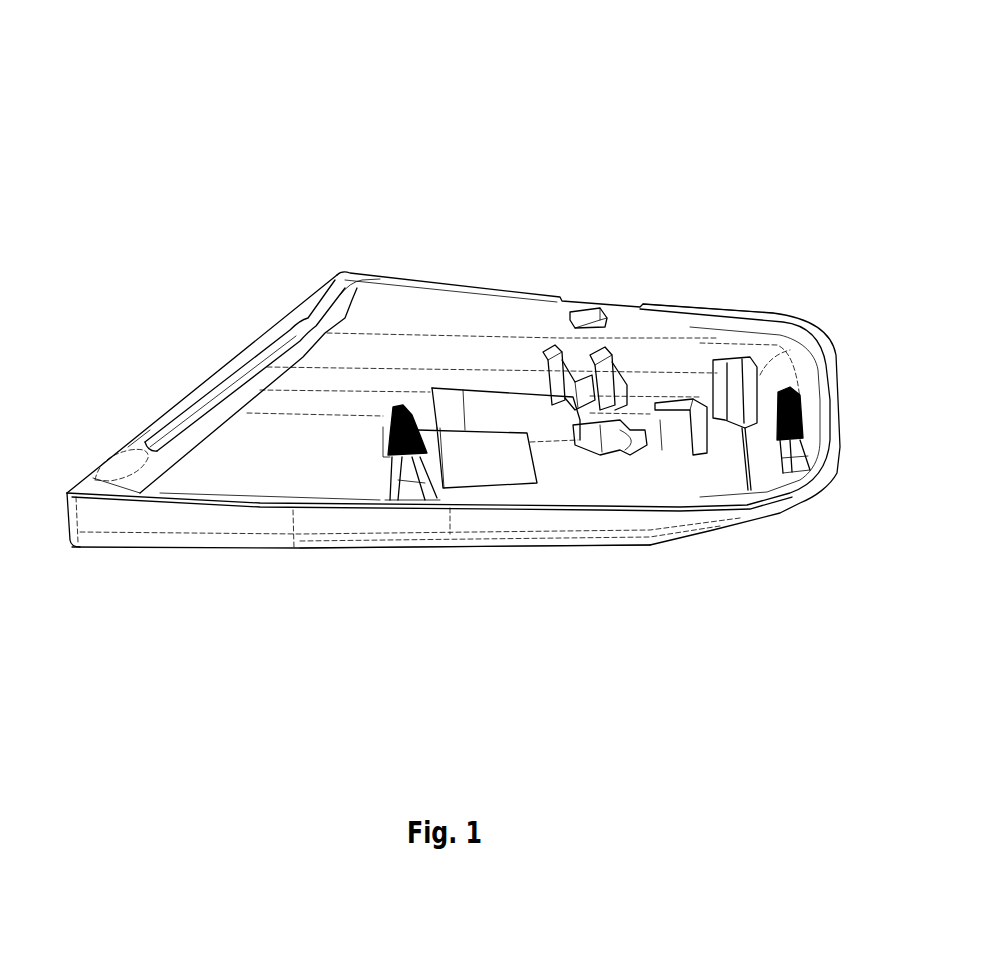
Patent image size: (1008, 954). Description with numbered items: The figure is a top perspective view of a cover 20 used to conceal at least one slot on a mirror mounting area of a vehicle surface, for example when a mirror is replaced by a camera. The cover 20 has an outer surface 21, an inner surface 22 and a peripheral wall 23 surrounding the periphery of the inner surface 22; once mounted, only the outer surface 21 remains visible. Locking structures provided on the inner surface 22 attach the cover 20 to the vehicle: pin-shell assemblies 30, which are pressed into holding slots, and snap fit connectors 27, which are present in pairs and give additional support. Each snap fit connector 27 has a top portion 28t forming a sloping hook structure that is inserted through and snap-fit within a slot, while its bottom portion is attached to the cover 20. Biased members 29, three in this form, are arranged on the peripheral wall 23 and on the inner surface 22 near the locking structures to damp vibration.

The cover 20 is at (462, 372).
The outer surface 21 is at (650, 543).
The inner surface 22 is at (268, 457).
The peripheral wall 23 is at (690, 304).
The snap fit connector 27 is at (603, 367).
The top portion 28t is at (552, 345).
The biased member 29 is at (124, 448).
The pin-shell assembly 30 is at (378, 450).